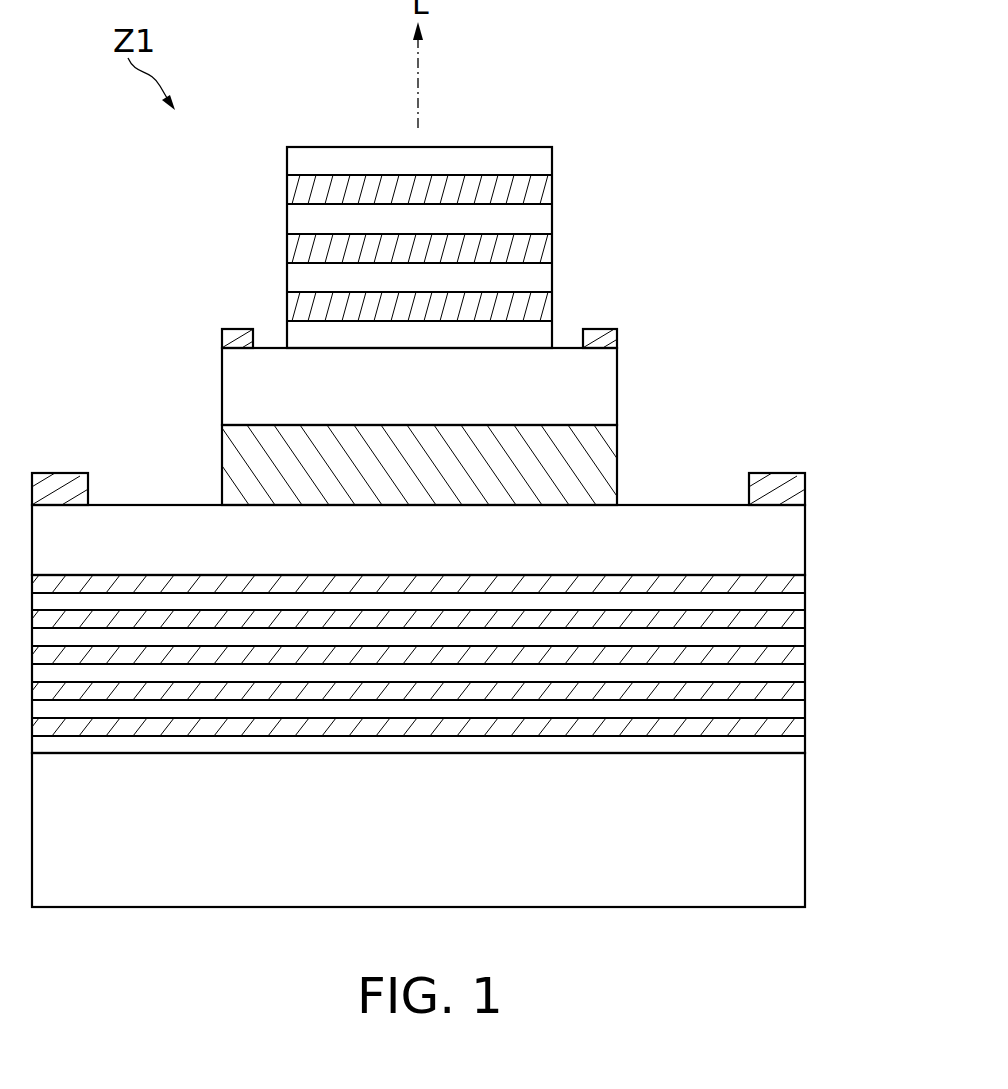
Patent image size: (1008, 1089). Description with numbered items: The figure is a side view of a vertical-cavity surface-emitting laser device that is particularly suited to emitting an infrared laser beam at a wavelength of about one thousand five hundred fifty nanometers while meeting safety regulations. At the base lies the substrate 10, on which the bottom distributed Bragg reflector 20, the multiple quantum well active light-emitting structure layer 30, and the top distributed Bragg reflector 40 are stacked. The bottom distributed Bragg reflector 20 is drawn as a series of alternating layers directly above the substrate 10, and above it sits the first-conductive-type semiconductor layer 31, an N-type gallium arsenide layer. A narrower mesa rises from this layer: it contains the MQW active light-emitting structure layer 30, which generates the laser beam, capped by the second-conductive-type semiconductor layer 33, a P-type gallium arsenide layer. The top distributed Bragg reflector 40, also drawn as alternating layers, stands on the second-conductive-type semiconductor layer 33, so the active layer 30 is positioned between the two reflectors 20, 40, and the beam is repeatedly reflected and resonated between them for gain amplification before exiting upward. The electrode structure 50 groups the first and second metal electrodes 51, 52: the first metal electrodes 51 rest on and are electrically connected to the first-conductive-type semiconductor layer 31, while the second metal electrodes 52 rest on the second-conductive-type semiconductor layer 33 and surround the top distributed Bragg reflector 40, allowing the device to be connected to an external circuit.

The substrate 10 is at (785, 833).
The bottom distributed Bragg reflector 20 is at (820, 575).
The multiple quantum well (MQW) active light-emitting structure layer 30 is at (622, 425).
The first-conductive-type semiconductor layer 31 is at (785, 535).
The second-conductive-type semiconductor layer 33 is at (240, 390).
The top distributed Bragg reflector 40 is at (558, 147).
The electrode structure 50 is at (461, 312).
The first metal electrodes 51 is at (767, 490).
The second metal electrodes 52 is at (617, 341).